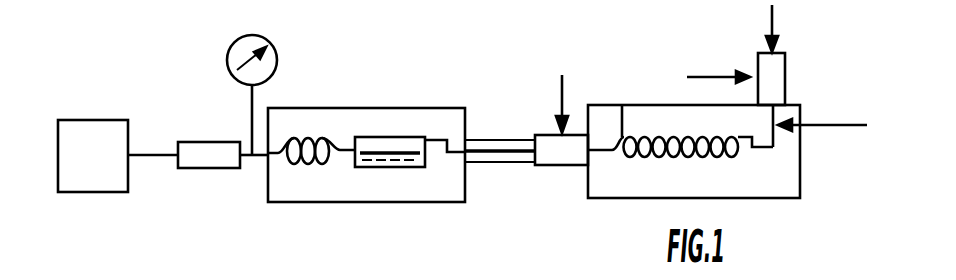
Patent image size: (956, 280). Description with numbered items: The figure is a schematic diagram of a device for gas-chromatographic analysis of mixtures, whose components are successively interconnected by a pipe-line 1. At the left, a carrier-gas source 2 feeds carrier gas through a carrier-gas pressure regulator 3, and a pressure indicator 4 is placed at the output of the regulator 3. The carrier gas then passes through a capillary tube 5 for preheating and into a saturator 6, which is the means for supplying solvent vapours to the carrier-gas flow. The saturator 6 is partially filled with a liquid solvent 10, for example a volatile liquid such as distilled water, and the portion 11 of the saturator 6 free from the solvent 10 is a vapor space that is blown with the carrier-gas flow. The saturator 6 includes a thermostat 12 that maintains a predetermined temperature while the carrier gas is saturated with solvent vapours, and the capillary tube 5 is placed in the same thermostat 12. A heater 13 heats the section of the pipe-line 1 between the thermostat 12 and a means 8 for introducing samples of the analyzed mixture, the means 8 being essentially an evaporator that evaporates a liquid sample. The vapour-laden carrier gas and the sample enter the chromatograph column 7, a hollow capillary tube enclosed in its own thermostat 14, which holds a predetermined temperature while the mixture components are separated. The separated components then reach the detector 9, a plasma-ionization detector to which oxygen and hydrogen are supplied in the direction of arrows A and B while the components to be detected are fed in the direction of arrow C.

The pipe-line 1 is at (151, 152).
The carrier-gas source 2 is at (93, 156).
The carrier-gas pressure regulator 3 is at (199, 147).
The pressure indicator 4 is at (278, 62).
The capillary tube 5 is at (318, 140).
The saturator 6 is at (370, 137).
The chromatograph column 7 is at (622, 105).
The means for introducing samples 8 is at (560, 165).
The detector 9 is at (787, 67).
The liquid solvent 10 is at (390, 161).
The portion of the saturator free from the solvent 11 is at (405, 143).
The thermostat 12 is at (431, 185).
The heater 13 is at (490, 140).
The thermostat 14 is at (768, 176).